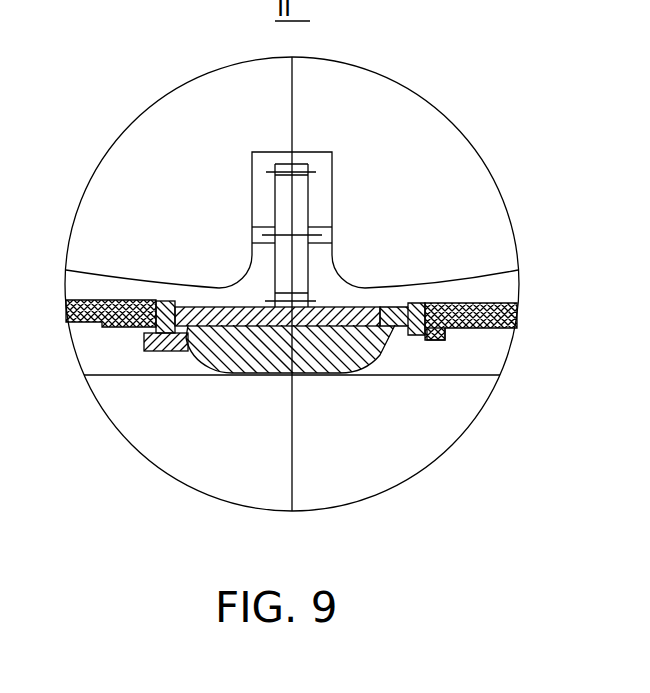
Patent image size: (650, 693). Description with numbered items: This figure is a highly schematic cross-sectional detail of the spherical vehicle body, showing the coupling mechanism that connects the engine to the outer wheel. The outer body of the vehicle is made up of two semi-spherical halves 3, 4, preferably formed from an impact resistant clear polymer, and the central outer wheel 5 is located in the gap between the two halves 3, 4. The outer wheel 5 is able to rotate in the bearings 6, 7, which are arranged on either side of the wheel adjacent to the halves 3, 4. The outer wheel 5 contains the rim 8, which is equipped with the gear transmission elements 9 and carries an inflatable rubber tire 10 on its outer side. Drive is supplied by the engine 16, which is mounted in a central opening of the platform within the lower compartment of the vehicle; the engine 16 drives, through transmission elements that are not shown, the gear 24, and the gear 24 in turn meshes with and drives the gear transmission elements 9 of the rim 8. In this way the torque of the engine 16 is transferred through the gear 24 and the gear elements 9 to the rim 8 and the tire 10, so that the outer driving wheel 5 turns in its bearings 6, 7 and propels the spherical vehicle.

The semi-spherical half 3 is at (490, 301).
The semi-spherical half 4 is at (103, 327).
The central outer wheel 5 is at (262, 325).
The bearing 6 is at (428, 338).
The bearing 7 is at (160, 307).
The rim 8 is at (362, 307).
The gear transmission elements 9 is at (287, 325).
The inflatable rubber tire 10 is at (265, 327).
The engine 16 is at (292, 216).
The gear 24 is at (297, 203).